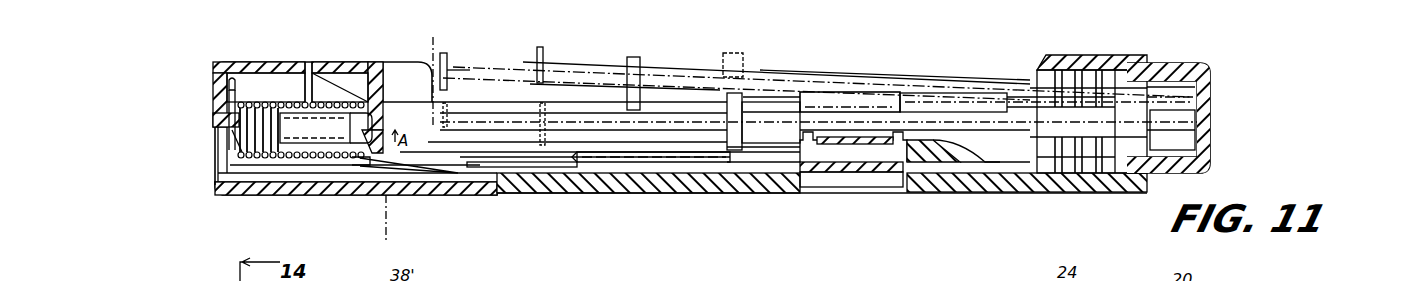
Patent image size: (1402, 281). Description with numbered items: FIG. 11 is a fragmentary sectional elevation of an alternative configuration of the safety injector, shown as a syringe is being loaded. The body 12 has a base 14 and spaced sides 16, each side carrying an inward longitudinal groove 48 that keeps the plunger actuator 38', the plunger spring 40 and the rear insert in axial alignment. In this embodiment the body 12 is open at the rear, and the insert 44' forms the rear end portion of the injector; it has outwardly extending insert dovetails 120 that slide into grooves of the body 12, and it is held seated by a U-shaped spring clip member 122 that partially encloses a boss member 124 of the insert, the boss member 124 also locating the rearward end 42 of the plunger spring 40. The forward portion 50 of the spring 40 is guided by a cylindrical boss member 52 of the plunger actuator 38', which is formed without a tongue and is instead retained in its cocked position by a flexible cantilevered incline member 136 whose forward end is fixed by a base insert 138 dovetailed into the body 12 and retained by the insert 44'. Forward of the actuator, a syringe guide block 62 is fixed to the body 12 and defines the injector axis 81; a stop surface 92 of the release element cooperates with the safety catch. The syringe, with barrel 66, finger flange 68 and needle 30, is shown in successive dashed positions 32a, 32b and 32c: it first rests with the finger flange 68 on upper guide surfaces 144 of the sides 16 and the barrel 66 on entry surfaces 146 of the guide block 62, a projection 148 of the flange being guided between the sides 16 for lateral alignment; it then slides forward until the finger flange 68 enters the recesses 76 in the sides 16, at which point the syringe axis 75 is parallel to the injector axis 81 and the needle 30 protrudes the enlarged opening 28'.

The body 12 is at (422, 40).
The base 14 is at (638, 195).
The sides 16 is at (518, 140).
The opening 28' is at (1193, 115).
The needle 30 is at (1170, 98).
The dashed lines (initial syringe position) 32a is at (458, 56).
The dashed lines (intermediate syringe position) 32b is at (572, 53).
The dashed lines (flange-entry syringe position) 32c is at (820, 68).
The plunger actuator 38' is at (347, 94).
The plunger spring 40 is at (273, 165).
The rearward end of plunger spring 42 is at (242, 165).
The insert 44' is at (259, 81).
The longitudinal groove 48 is at (508, 102).
The forward portion of plunger spring 50 is at (364, 168).
The cylindrical boss member 52 is at (305, 130).
The syringe guide block 62 is at (893, 90).
The barrel 66 is at (776, 60).
The finger flange 68 is at (730, 52).
The syringe axis 75 is at (644, 70).
The recess 76 is at (765, 143).
The injector axis 81 is at (386, 134).
The stop surface 92 is at (919, 146).
The insert dovetails 120 is at (228, 154).
The spring clip member 122 is at (236, 80).
The boss member 124 is at (270, 91).
The incline member 136 is at (431, 146).
The base insert 138 is at (453, 192).
The upper guide surfaces 144 is at (582, 100).
The entry surfaces 146 is at (918, 92).
The projection 148 is at (723, 54).